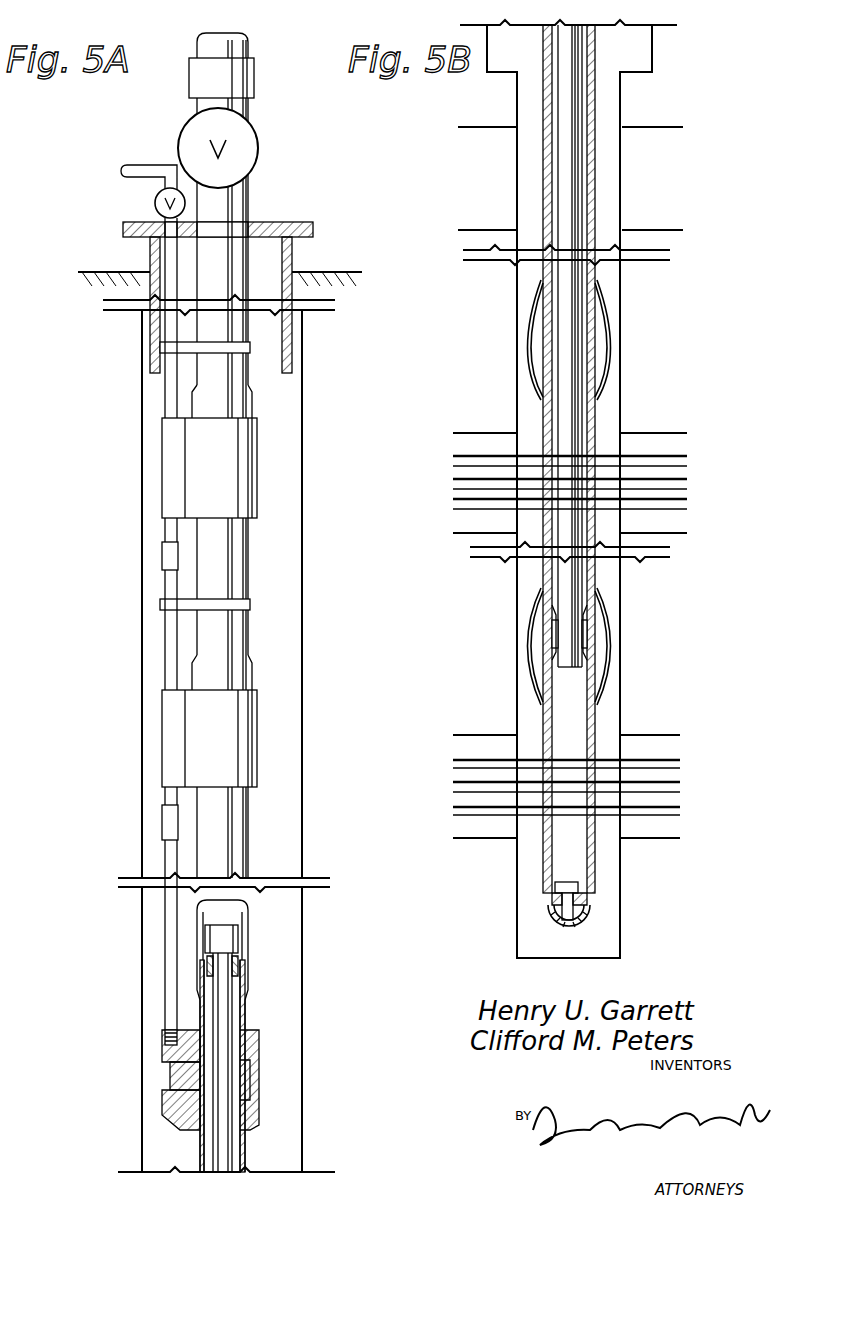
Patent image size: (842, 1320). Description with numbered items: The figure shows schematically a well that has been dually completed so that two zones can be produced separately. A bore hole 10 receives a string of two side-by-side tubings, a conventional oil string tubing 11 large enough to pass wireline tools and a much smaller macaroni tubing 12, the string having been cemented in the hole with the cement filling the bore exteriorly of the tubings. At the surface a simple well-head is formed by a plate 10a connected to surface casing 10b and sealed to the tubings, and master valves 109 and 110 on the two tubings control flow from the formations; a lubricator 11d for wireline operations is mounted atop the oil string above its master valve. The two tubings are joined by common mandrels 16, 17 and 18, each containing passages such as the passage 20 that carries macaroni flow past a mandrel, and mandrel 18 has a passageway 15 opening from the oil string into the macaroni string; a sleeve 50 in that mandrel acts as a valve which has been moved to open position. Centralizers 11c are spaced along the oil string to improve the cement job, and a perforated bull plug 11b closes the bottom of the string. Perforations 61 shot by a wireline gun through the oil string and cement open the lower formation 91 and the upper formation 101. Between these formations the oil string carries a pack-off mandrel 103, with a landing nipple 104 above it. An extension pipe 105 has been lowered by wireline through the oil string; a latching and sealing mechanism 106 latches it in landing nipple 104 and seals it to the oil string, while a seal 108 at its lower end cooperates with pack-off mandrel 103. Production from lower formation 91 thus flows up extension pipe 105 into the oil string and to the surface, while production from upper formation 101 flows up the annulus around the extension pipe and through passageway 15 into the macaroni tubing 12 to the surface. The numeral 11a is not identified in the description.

In FIG. 5A, the bore hole 10 is at (302, 352).
In FIG. 5B, the bore hole 10 is at (622, 278).
In FIG. 5A, the plate 10a is at (296, 202).
In FIG. 5A, the surface casing 10b is at (292, 257).
In FIG. 5A, the tubing 11 is at (250, 569).
In FIG. 5B, the plug 11a is at (580, 907).
In FIG. 5B, the perforated bull plug 11b is at (598, 925).
In FIG. 5B, the centralizers 11c is at (612, 300).
In FIG. 5A, the lubricator 11d is at (248, 52).
In FIG. 5A, the macaroni tubing 12 is at (165, 397).
In FIG. 5A, the passageway 15 is at (175, 1085).
In FIG. 5A, the mandrel 16 is at (165, 457).
In FIG. 5A, the mandrel 17 is at (165, 733).
In FIG. 5A, the mandrel 18 is at (163, 1108).
In FIG. 5A, the passage 20 is at (168, 1060).
In FIG. 5A, the sleeve 50 is at (260, 1060).
In FIG. 5B, the perforations 61 is at (652, 768).
In FIG. 5B, the lower formation 91 is at (473, 745).
In FIG. 5B, the upper formation 101 is at (473, 432).
In FIG. 5B, the pack-off mandrel 103 is at (590, 622).
In FIG. 5A, the landing nipple 104 is at (243, 942).
In FIG. 5A, the extension pipe 105 is at (222, 1022).
In FIG. 5B, the extension pipe 105 is at (572, 98).
In FIG. 5A, the latching and sealing mechanism 106 is at (205, 937).
In FIG. 5A, the seal 108 is at (238, 1152).
In FIG. 5B, the seal 108 is at (583, 418).
In FIG. 5A, the master valve 109 is at (258, 140).
In FIG. 5A, the master valve 110 is at (157, 196).